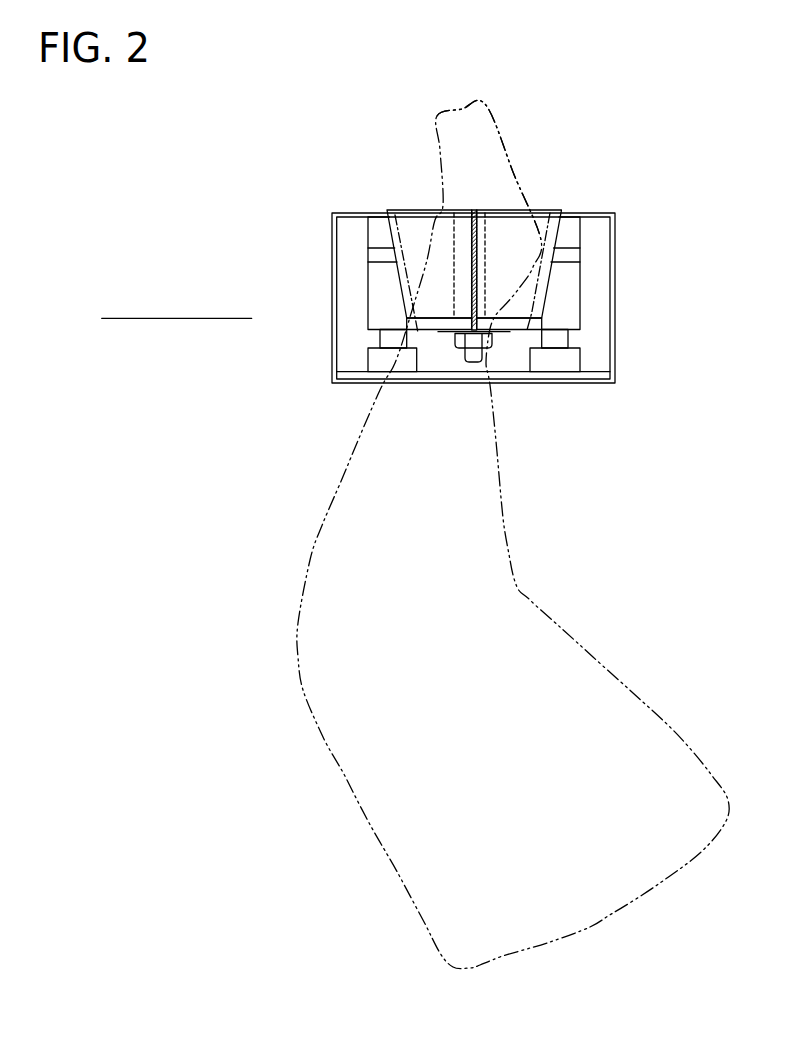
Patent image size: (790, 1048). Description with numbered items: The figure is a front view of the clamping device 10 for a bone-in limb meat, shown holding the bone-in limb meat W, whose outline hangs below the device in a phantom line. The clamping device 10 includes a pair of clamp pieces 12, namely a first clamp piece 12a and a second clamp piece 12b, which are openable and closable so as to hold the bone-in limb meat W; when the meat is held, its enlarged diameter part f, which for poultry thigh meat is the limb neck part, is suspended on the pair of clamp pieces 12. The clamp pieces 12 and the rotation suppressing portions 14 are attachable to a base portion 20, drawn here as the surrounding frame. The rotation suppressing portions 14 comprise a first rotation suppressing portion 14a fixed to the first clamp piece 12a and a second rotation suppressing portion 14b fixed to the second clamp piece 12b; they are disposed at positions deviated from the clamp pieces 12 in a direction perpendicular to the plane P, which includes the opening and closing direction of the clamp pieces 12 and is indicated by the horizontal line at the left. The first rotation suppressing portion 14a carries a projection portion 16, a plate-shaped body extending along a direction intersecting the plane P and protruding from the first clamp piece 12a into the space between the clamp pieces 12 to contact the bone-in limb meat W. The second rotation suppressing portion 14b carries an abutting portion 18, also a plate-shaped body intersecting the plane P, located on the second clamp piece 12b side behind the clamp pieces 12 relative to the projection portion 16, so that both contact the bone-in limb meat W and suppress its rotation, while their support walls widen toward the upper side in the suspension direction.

The clamping device 10 is at (527, 48).
The clamp pieces 12 is at (498, 402).
The first clamp piece 12a is at (430, 323).
The second clamp piece 12b is at (522, 323).
The rotation suppressing portions 14 is at (478, 209).
The first rotation suppressing portion 14a is at (425, 210).
The second rotation suppressing portion 14b is at (502, 210).
The projection portion 16 is at (417, 248).
The abutting portion 18 is at (525, 298).
The base portion 20 is at (330, 352).
The bone-in limb meat W is at (308, 555).
The plane P is at (167, 318).
The enlarged diameter part f is at (508, 247).